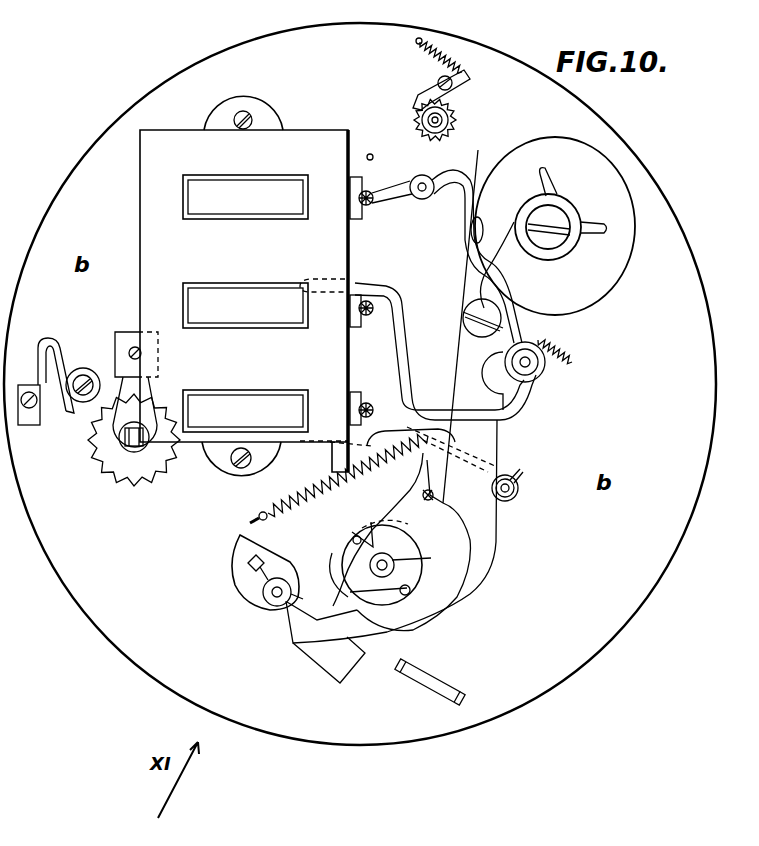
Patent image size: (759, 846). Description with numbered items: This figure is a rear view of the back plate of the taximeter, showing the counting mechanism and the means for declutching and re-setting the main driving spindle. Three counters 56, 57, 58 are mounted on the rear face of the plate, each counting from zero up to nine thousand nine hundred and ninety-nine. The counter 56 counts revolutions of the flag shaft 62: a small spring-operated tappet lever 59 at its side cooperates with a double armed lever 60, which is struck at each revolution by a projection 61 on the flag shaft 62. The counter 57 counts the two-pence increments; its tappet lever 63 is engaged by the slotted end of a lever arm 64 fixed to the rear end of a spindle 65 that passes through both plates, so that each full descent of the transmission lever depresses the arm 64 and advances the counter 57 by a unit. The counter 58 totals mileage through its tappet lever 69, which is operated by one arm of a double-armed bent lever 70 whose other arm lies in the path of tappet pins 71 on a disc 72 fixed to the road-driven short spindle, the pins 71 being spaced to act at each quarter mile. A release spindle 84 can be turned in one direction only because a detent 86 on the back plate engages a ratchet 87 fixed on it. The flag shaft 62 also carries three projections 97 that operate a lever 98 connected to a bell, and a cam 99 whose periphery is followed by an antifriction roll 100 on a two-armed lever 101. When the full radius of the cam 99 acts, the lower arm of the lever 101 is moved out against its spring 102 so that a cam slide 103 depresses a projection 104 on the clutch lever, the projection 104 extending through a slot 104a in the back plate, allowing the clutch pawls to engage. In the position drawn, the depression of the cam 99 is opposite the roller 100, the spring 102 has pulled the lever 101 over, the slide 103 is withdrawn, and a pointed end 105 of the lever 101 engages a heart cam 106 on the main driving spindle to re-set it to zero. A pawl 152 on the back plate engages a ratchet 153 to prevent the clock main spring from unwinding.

The counter 56 is at (183, 193).
The counter 57 is at (183, 302).
The counter 58 is at (250, 393).
The tappet lever 59 is at (356, 176).
The double armed lever 60 is at (393, 190).
The projection 61 is at (506, 260).
The flag shaft 62 is at (560, 216).
The tappet lever 63 is at (364, 322).
The lever arm 64 is at (395, 323).
The spindle 65 is at (519, 488).
The tappet lever 69 is at (353, 395).
The double-armed bent lever 70 is at (428, 467).
The tappet pins 71 is at (334, 575).
The disc 72 is at (404, 542).
The spindle 84 is at (450, 130).
The detent 86 is at (430, 92).
The ratchet 87 is at (453, 113).
The projections 97 is at (554, 179).
The lever 98 is at (533, 380).
The cam 99 is at (555, 226).
The antifriction roll 100 is at (468, 231).
The two-armed lever 101 is at (497, 546).
The spring 102 is at (320, 484).
The cam slide 103 is at (342, 683).
The projection 104 is at (416, 672).
The slot 104a is at (462, 694).
The pointed end 105 is at (280, 606).
The heart cam 106 is at (235, 567).
The pawl 152 is at (82, 417).
The ratchet 153 is at (125, 473).